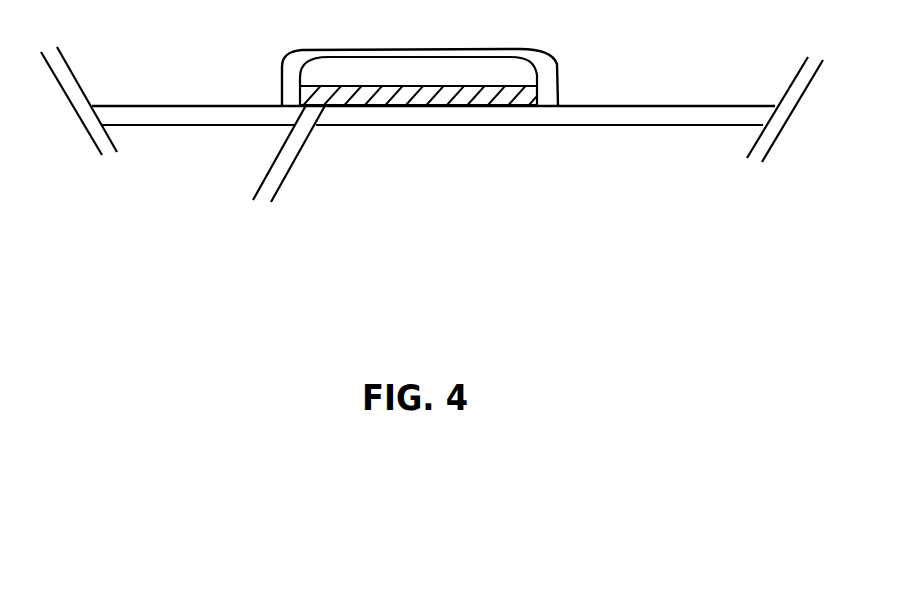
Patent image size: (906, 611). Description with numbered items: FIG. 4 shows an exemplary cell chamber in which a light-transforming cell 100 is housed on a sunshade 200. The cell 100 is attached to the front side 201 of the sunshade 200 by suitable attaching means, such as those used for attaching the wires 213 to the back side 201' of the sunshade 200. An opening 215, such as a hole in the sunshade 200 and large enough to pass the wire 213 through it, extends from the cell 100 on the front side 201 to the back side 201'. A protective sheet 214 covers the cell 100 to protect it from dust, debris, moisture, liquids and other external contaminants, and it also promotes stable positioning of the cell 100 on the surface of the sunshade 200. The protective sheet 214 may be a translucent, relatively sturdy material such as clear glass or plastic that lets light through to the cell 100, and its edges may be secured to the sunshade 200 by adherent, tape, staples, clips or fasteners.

The light-transforming cell 100 is at (537, 70).
The sunshade 200 is at (432, 111).
The front side 201 is at (433, 85).
The back side 201' is at (432, 150).
The wires 213 is at (280, 182).
The protective sheet 214 is at (335, 48).
The opening 215 is at (320, 127).